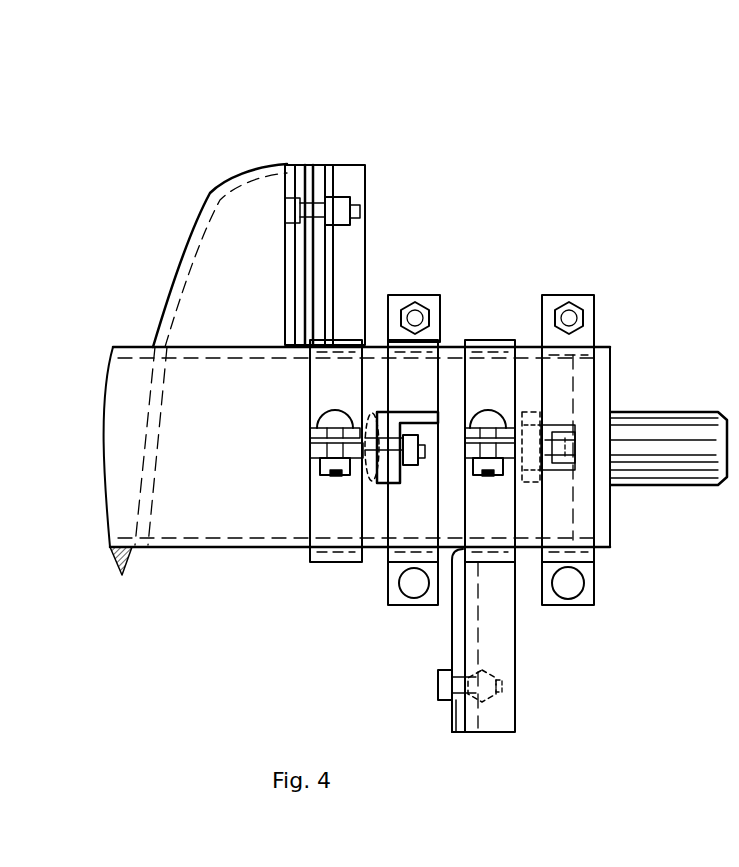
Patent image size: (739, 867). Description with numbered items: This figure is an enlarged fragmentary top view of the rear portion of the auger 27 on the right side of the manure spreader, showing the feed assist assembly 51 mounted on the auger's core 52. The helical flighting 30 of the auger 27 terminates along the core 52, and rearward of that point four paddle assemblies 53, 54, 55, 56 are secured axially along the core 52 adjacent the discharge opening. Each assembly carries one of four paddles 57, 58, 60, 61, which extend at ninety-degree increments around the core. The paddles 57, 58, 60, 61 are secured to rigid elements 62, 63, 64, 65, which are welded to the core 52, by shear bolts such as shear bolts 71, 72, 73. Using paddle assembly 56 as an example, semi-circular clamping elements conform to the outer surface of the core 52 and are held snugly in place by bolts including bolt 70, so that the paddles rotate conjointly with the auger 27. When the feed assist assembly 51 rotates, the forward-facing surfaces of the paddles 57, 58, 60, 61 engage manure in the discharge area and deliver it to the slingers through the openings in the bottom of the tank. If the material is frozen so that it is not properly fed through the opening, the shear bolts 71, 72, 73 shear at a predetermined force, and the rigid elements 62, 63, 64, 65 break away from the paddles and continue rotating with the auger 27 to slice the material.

The auger 27 is at (199, 212).
The flighting 30 is at (245, 215).
The feed assist assembly 51 is at (533, 182).
The core 52 is at (216, 458).
The paddle assembly 53 is at (355, 162).
The paddle assembly 54 is at (410, 292).
The paddle assembly 55 is at (488, 338).
The paddle assembly 56 is at (575, 292).
The paddle 57 is at (350, 235).
The paddle 58 is at (410, 411).
The paddle 60 is at (505, 652).
The paddle 61 is at (580, 480).
The rigid element 62 is at (300, 175).
The rigid element 63 is at (380, 485).
The rigid element 64 is at (456, 732).
The rigid element 65 is at (528, 408).
The bolt 70 is at (675, 424).
The shear bolt 71 is at (287, 212).
The shear bolt 72 is at (372, 477).
The shear bolt 73 is at (436, 686).